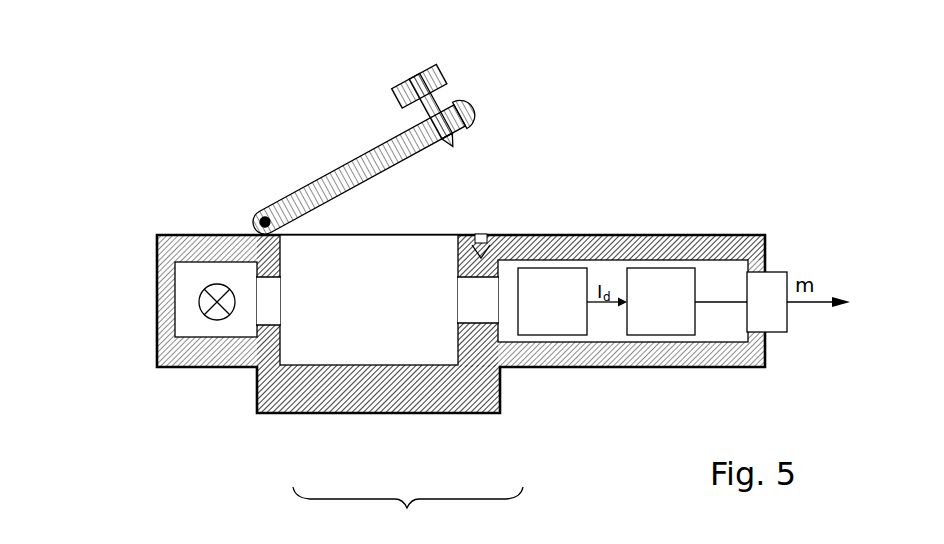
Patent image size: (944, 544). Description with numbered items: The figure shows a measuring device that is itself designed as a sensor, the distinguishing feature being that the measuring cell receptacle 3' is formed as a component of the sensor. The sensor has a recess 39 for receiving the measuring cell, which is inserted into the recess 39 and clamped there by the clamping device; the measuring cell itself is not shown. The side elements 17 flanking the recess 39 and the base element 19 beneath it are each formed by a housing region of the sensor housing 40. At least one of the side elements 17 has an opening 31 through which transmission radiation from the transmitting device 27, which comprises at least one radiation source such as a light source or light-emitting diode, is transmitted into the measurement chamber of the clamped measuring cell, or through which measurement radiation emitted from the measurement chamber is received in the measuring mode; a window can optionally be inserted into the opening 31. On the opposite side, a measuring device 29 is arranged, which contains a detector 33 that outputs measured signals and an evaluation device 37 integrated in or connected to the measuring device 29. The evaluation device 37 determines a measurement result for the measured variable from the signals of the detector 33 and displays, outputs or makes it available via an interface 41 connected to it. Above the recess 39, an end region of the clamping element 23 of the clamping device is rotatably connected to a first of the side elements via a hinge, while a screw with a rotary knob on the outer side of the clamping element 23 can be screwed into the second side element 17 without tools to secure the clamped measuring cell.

The clamping element 23 is at (356, 271).
The sensor housing 40 is at (585, 245).
The measuring device 29 is at (707, 245).
The transmitting device 27 is at (233, 315).
The opening 31 is at (268, 310).
The recess 39 is at (380, 311).
The detector 33 is at (565, 316).
The evaluation device 37 is at (673, 316).
The interface 41 is at (779, 316).
The side elements 17 is at (278, 332).
The base element 19 is at (345, 390).
The measuring cell receptacle 3' is at (408, 514).